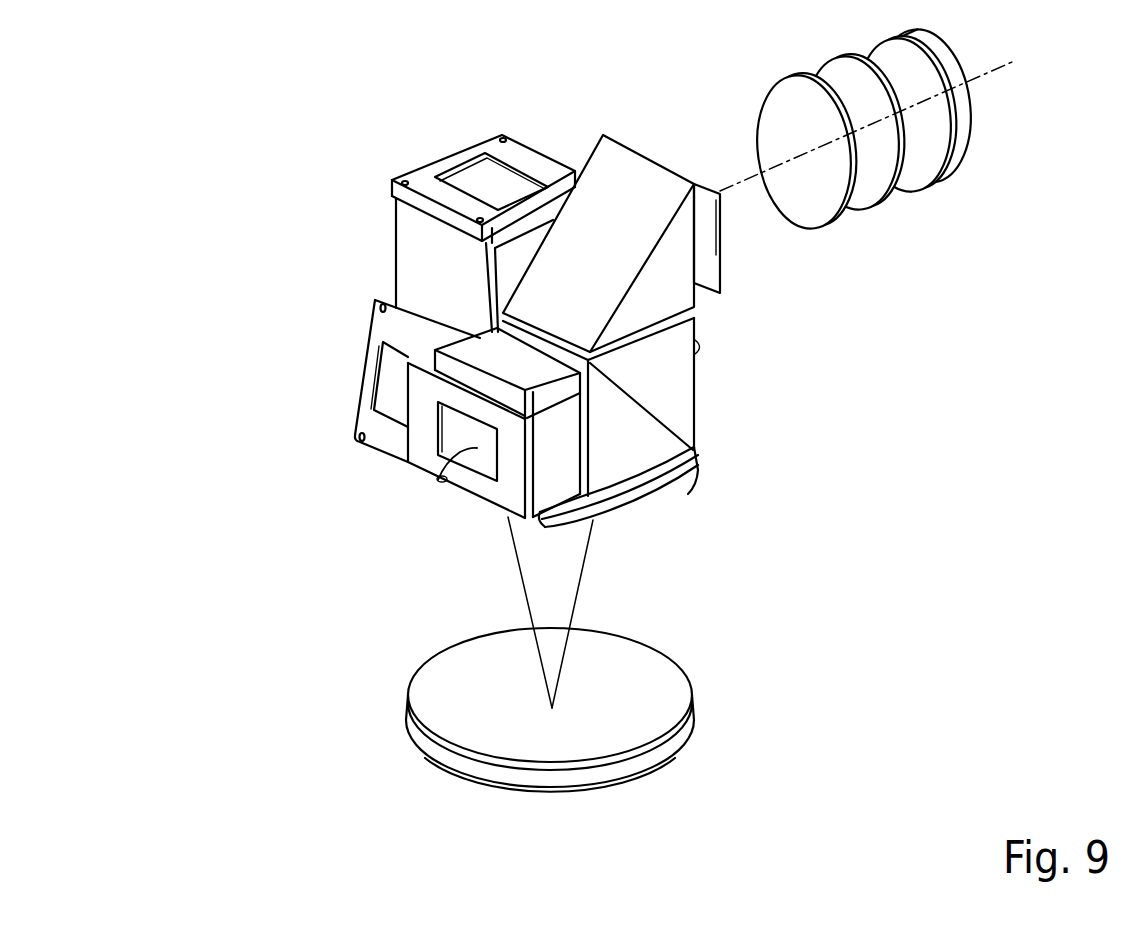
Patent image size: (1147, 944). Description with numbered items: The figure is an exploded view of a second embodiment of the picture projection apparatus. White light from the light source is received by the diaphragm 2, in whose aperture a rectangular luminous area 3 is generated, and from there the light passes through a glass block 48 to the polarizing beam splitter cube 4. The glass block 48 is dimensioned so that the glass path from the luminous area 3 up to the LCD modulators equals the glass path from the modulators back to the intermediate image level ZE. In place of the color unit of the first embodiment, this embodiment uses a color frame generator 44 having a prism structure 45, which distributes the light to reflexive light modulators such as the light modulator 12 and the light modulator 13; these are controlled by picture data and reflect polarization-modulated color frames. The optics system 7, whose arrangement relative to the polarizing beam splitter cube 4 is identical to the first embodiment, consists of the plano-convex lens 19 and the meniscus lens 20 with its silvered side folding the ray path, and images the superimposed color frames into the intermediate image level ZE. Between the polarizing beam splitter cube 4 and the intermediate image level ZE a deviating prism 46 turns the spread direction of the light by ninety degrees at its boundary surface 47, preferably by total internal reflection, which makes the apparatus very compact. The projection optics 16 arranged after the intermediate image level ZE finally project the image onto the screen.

The diaphragm 2 is at (473, 485).
The luminous area 3 is at (440, 480).
The polarizing beam splitter cube 4 is at (696, 400).
The optics system 7 is at (862, 589).
The reflexive light modulator 12 is at (356, 400).
The reflexive light modulator 13 is at (461, 147).
The projection optics 16 is at (978, 193).
The plano-convex lens 19 is at (689, 494).
The meniscus lens 20 is at (698, 715).
The color frame generator 44 is at (366, 259).
The prism structure 45 is at (372, 282).
The deviating prism 46 is at (703, 304).
The boundary surface 47 is at (610, 162).
The glass block 48 is at (555, 510).
The intermediate image level ZE is at (720, 270).